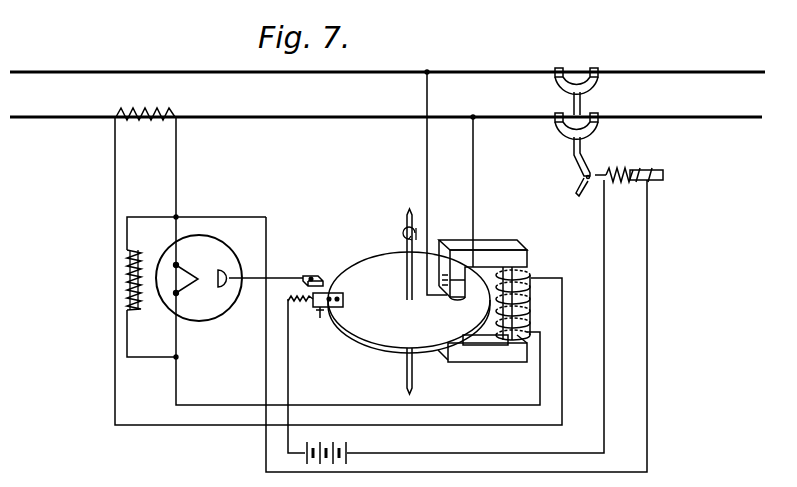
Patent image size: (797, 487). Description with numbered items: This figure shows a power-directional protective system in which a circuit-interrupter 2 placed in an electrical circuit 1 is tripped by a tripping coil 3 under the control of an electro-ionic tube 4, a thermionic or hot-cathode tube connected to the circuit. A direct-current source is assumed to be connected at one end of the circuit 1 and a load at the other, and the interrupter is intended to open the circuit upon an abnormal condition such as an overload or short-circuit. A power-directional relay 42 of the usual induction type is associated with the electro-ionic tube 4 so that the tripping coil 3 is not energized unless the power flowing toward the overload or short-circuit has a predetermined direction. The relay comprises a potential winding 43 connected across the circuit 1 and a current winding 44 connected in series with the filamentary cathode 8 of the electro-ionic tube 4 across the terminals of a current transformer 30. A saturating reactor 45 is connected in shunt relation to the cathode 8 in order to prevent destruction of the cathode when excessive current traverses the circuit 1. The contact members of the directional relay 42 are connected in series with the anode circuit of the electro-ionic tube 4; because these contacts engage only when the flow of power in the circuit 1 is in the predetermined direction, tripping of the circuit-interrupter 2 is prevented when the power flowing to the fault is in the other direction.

The electrical circuit 1 is at (318, 107).
The circuit-interrupter 2 is at (592, 135).
The tripping coil 3 is at (631, 184).
The electro-ionic tube 4 is at (207, 312).
The filamentary cathode 8 is at (188, 268).
The current transformer 30 is at (152, 120).
The power-directional relay 42 is at (371, 327).
The potential winding 43 is at (455, 281).
The current winding 44 is at (532, 305).
The saturating reactor 45 is at (126, 271).